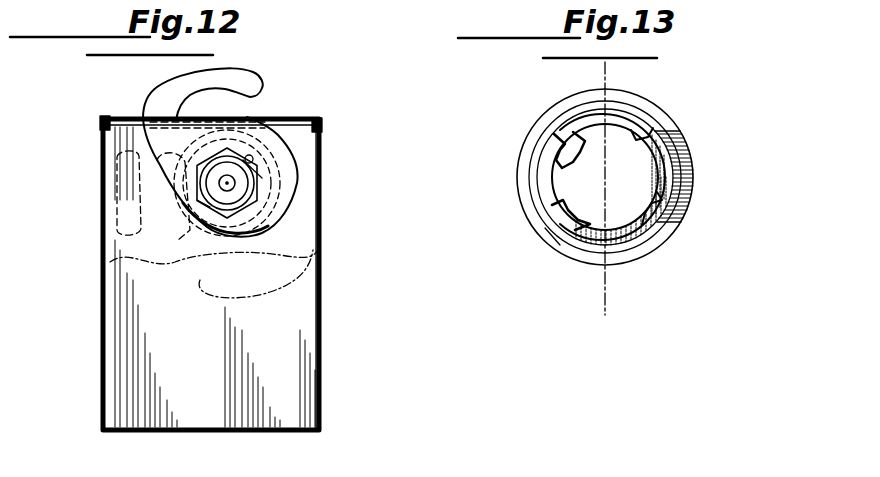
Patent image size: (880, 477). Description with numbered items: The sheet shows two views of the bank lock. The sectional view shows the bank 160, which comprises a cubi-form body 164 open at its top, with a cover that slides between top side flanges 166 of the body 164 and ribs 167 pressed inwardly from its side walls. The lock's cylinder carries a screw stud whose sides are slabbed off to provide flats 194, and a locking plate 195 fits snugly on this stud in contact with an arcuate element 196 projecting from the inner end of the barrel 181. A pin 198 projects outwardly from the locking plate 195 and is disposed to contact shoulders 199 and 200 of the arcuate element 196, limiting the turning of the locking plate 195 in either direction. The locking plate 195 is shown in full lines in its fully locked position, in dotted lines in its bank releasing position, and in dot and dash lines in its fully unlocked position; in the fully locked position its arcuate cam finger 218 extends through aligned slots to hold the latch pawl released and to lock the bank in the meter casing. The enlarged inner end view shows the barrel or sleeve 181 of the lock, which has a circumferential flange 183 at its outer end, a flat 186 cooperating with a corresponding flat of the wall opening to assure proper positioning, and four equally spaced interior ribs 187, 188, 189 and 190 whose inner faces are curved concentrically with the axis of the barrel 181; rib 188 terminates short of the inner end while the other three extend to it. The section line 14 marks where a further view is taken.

In FIG. 13, the section line 14 is at (540, 72).
In FIG. 12, the bank 160 is at (322, 288).
In FIG. 12, the cubi-form body 164 is at (323, 232).
In FIG. 12, the top side flanges 166 is at (312, 116).
In FIG. 12, the ribs 167 is at (323, 126).
In FIG. 13, the barrel or sleeve 181 is at (517, 181).
In FIG. 13, the circumferential flange 183 is at (694, 177).
In FIG. 13, the flat 186 is at (673, 153).
In FIG. 13, the rib 187 is at (640, 125).
In FIG. 13, the rib 188 is at (557, 138).
In FIG. 13, the rib 189 is at (560, 214).
In FIG. 13, the rib 190 is at (655, 205).
In FIG. 12, the flats 194 is at (250, 183).
In FIG. 12, the locking plate 195 is at (297, 190).
In FIG. 13, the arcuate element 196 is at (658, 232).
In FIG. 12, the pin 198 is at (254, 159).
In FIG. 13, the shoulder 199 is at (560, 233).
In FIG. 13, the shoulder 200 is at (660, 120).
In FIG. 12, the arcuate cam finger 218 is at (247, 78).